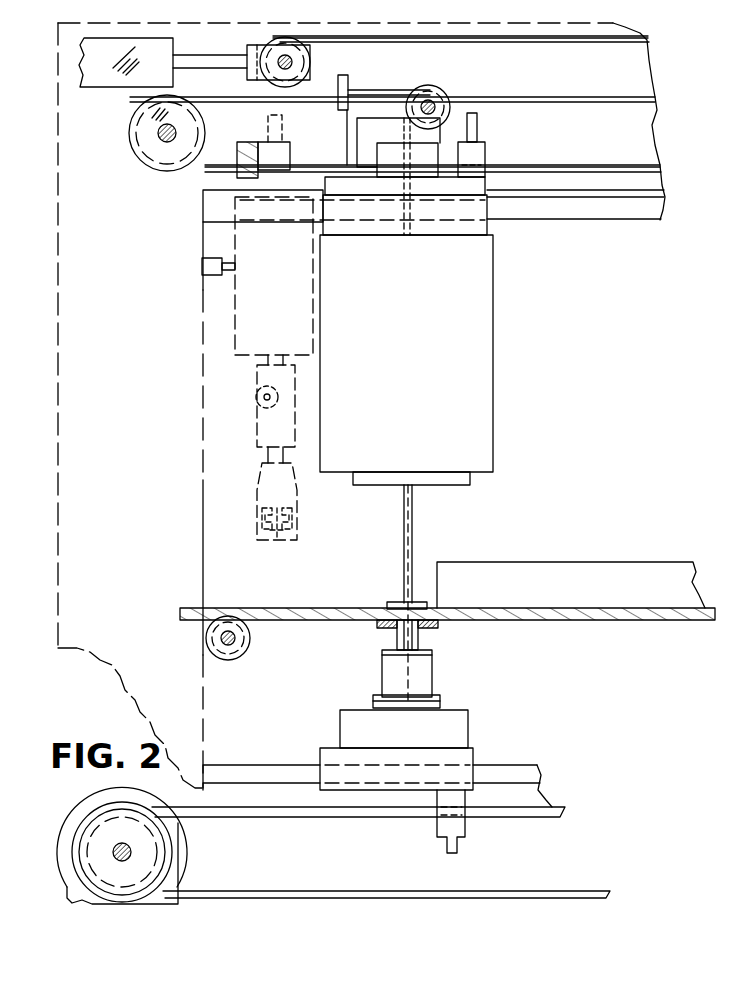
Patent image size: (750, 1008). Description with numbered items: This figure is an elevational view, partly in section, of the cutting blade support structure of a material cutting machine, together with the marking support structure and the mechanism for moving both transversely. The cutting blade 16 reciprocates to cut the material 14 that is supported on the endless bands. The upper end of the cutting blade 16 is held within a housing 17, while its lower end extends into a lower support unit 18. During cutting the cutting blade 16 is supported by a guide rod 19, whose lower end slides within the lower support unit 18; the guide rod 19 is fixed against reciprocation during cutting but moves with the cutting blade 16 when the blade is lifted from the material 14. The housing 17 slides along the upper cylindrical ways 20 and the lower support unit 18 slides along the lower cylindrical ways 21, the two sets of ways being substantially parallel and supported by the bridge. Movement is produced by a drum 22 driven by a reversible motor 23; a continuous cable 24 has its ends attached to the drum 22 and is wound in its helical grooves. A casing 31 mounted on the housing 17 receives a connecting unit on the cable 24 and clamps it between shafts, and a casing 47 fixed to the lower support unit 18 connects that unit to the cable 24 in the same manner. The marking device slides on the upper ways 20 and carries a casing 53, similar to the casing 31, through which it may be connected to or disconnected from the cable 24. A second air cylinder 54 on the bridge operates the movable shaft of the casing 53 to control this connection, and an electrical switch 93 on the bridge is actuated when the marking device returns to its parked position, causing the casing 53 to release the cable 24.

The material 14 is at (671, 561).
The cutting blade 16 is at (404, 566).
The housing 17 is at (494, 307).
The lower support unit 18 is at (418, 637).
The guide rod 19 is at (434, 684).
The upper cylindrical ways 20 is at (598, 221).
The lower cylindrical ways 21 is at (525, 762).
The drum 22 is at (172, 858).
The reversible motor 23 is at (188, 840).
The continuous cable 24 is at (563, 812).
The casing 31 is at (486, 156).
The casing 47 is at (466, 825).
The casing 53 is at (285, 150).
The second air cylinder 54 is at (236, 150).
The electrical switch 93 is at (213, 277).